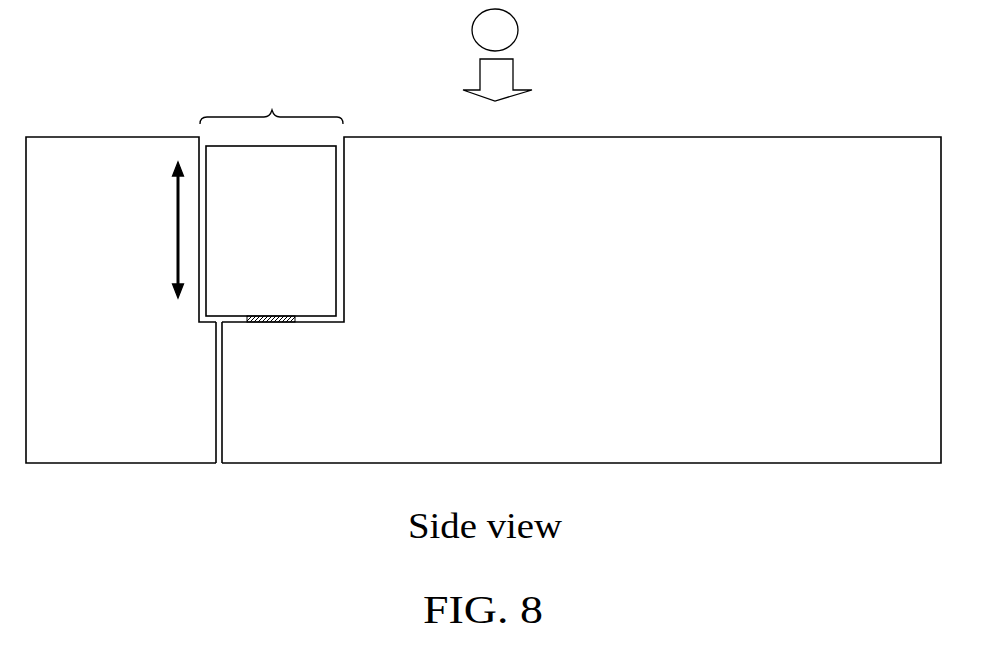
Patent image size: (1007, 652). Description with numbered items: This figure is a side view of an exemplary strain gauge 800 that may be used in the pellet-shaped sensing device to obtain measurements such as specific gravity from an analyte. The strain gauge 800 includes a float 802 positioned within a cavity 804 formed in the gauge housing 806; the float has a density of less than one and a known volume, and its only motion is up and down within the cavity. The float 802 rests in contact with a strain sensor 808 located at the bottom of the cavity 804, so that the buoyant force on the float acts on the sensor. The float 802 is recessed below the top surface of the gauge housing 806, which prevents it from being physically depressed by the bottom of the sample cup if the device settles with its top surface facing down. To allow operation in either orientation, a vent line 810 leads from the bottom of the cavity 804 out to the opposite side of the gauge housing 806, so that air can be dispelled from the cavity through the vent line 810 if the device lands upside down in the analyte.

The strain gauge 800 is at (133, 97).
The float 802 is at (323, 237).
The cavity 804 is at (271, 102).
The gauge housing 806 is at (719, 120).
The strain sensor 808 is at (300, 332).
The vent line 810 is at (239, 407).